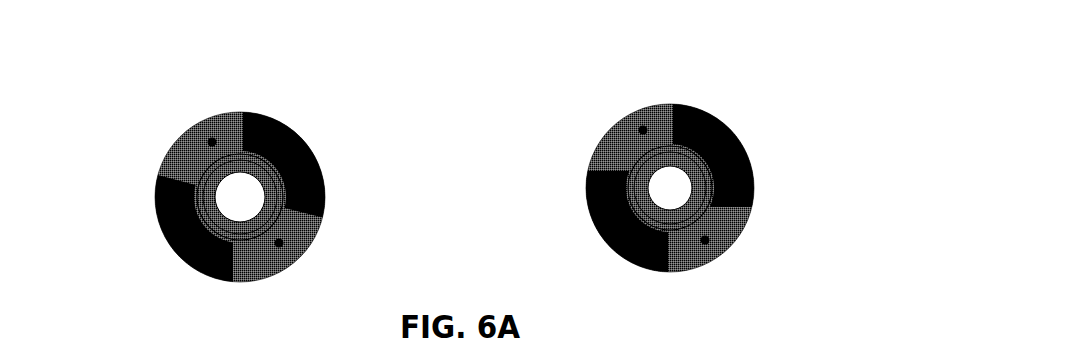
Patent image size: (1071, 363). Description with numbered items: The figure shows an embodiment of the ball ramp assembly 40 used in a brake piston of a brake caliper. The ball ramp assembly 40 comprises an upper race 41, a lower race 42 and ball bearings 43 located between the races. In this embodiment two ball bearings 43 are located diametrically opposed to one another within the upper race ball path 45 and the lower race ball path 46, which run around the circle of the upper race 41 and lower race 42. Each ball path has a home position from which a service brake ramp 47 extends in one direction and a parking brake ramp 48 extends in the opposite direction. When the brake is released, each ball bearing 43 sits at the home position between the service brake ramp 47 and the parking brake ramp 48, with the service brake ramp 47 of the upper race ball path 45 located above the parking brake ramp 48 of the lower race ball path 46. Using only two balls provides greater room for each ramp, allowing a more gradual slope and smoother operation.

The ball ramp assembly 40 is at (192, 80).
The upper race 41 is at (170, 235).
The lower race 42 is at (442, 214).
The ball bearing 43 is at (183, 187).
The upper race ball path 45 is at (305, 230).
The lower race ball path 46 is at (511, 193).
The service brake ramp 47 is at (212, 142).
The parking brake ramp 48 is at (283, 155).